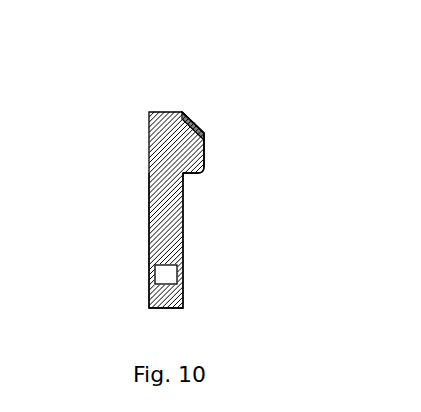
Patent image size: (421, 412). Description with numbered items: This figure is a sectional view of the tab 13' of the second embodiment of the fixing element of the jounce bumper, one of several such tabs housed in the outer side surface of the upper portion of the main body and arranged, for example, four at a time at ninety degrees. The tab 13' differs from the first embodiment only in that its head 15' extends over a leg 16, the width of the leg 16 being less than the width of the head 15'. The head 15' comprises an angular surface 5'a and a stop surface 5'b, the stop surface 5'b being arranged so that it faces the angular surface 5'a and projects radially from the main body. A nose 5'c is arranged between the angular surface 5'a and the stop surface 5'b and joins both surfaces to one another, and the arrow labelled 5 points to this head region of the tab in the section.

The tab 13' is at (133, 187).
The leg 16 is at (156, 231).
The head 5 is at (222, 128).
The angular surface 5'a is at (206, 93).
The nose 5'c is at (259, 143).
The stop surface 5'b is at (225, 200).
The head 15' is at (225, 126).